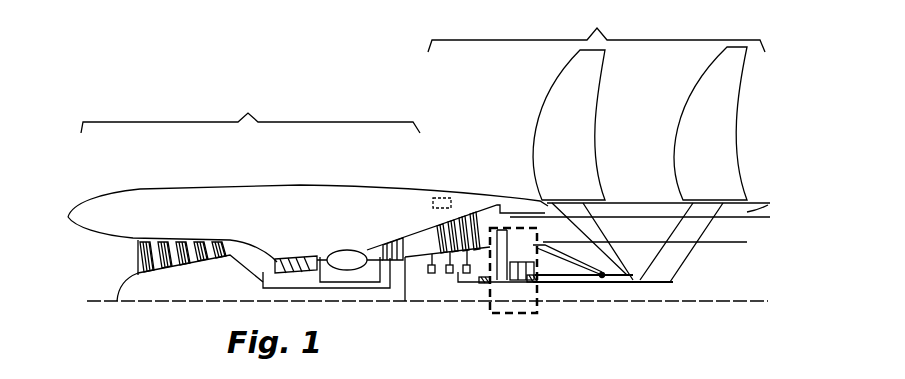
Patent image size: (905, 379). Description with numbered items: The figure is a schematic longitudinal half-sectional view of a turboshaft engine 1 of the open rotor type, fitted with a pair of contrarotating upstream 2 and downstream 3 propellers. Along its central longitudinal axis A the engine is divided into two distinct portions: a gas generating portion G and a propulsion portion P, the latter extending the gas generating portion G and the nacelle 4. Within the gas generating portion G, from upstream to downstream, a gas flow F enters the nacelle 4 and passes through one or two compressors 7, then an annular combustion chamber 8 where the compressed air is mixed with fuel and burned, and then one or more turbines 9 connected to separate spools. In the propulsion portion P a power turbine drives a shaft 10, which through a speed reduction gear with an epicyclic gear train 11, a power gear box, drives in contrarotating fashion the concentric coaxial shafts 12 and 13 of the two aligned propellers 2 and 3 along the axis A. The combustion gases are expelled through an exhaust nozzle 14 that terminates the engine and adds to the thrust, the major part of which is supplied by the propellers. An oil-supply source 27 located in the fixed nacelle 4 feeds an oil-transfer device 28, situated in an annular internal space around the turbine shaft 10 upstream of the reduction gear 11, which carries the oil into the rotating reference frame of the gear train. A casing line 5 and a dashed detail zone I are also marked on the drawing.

The turboshaft engine 1 is at (413, 86).
The upstream propeller 2 is at (612, 61).
The downstream propeller 3 is at (744, 71).
The nacelle 4 is at (145, 182).
The gas generator casing 5 is at (427, 227).
The compressors 7 is at (283, 262).
The annular combustion chamber 8 is at (345, 253).
The turbines 9 is at (457, 227).
The shaft 10 is at (463, 287).
The epicyclic gear train reduction gear 11 is at (513, 287).
The coaxial shaft 12 is at (573, 280).
The coaxial shaft 13 is at (604, 280).
The exhaust nozzle 14 is at (740, 230).
The oil-supply source 27 is at (443, 198).
The oil-transfer device 28 is at (497, 287).
The central longitudinal axis A is at (175, 303).
The gas flow F is at (100, 260).
The gas generating portion G is at (250, 110).
The propulsion portion P is at (596, 27).
The detail zone I is at (537, 313).